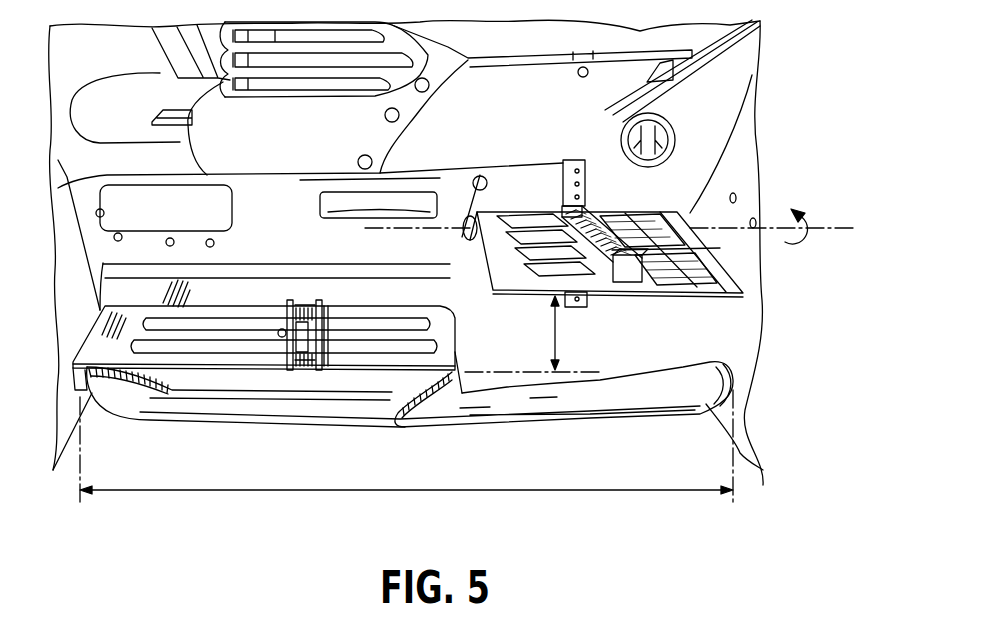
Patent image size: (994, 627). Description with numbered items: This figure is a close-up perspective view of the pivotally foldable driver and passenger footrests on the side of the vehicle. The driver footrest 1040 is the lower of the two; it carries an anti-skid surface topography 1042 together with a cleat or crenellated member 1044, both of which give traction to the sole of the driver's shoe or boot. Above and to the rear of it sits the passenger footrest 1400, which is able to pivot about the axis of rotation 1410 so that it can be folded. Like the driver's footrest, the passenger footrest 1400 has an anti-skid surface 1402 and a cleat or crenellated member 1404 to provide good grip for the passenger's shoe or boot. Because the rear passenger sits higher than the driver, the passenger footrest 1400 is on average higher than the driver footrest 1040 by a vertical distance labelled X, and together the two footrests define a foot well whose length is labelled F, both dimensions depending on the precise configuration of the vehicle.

The driver footrest 1040 is at (188, 380).
The anti-skid surface topography 1042 is at (102, 343).
The cleat or crenellated member 1044 is at (302, 368).
The passenger footrest 1400 is at (604, 297).
The anti-skid surface 1402 is at (677, 242).
The cleat or crenellated member 1404 is at (627, 268).
The axis of rotation 1410 is at (853, 227).